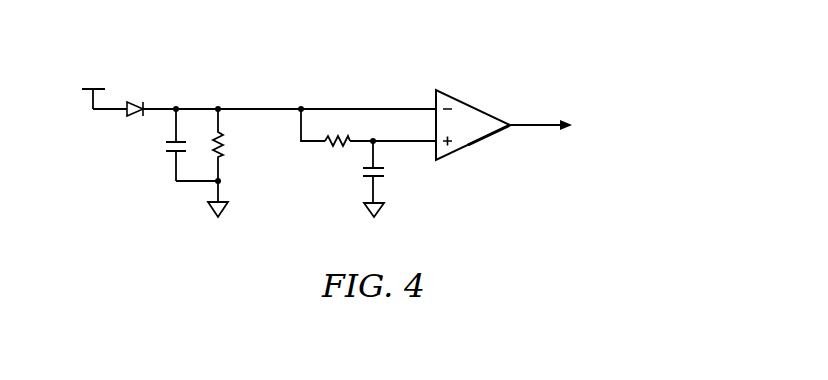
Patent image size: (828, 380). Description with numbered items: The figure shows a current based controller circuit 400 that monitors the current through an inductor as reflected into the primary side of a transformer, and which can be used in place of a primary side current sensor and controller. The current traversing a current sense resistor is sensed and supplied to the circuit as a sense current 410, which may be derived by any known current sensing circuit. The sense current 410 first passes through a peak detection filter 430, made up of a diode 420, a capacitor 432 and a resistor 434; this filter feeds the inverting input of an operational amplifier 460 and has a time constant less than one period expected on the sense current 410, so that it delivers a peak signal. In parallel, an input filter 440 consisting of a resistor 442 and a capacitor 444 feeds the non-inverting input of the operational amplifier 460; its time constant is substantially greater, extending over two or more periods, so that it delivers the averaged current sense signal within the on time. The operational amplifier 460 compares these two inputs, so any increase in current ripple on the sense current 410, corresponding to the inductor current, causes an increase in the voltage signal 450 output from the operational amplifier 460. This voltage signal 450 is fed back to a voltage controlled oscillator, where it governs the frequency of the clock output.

The current based controller circuit 400 is at (477, 83).
The sense current 410 is at (93, 63).
The diode 420 is at (138, 103).
The peak detection filter 430 is at (194, 183).
The capacitor 432 is at (166, 148).
The resistor 434 is at (223, 149).
The input filter 440 is at (372, 179).
The resistor 442 is at (333, 148).
The capacitor 444 is at (352, 188).
The voltage signal 450 is at (533, 124).
The operational amplifier 460 is at (473, 146).